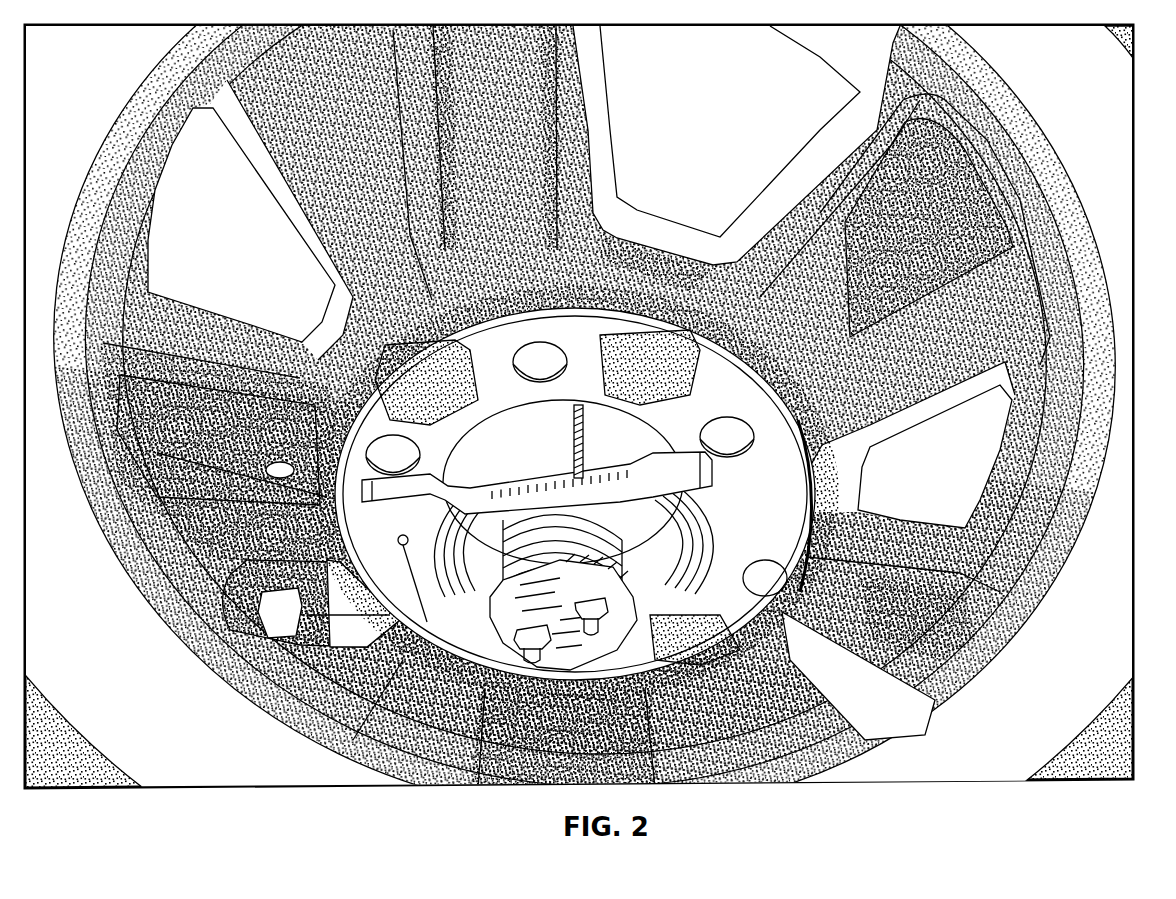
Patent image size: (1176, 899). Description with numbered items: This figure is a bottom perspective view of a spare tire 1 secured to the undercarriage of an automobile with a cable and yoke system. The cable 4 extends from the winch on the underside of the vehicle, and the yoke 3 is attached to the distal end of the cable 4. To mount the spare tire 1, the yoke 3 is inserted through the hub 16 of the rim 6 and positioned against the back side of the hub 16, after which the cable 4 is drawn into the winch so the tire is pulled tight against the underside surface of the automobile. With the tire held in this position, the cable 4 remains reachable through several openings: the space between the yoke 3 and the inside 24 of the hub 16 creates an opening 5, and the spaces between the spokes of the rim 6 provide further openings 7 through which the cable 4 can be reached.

The spare tire 1 is at (1110, 481).
The yoke 3 is at (545, 472).
The cable 4 is at (592, 439).
The opening 5 is at (620, 460).
The rim 6 is at (822, 136).
The openings 7 is at (699, 102).
The hub 16 is at (655, 674).
The inside of the hub 24 is at (560, 462).